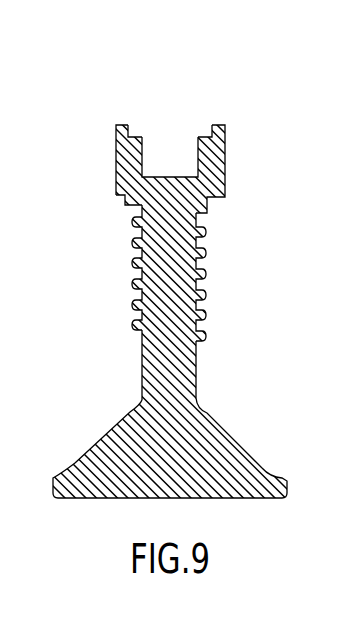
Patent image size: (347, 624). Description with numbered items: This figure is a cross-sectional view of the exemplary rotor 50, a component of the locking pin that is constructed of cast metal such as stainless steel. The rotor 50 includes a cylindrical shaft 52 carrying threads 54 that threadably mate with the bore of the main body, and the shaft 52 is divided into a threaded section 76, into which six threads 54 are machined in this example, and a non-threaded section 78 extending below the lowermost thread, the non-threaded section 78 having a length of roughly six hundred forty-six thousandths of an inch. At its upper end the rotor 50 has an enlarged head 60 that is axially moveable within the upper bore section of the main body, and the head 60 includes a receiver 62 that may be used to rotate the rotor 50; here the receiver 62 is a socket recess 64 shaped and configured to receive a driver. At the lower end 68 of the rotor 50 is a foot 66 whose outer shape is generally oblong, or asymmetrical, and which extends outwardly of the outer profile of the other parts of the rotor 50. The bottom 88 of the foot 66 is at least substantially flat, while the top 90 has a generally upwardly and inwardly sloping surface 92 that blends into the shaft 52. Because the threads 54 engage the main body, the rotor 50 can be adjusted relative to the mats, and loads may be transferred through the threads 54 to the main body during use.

The rotor 50 is at (252, 158).
The head 60 is at (116, 160).
The receiver 62 is at (185, 148).
The socket recess 64 is at (142, 148).
The threads 54 is at (206, 272).
The threaded section 76 is at (120, 269).
The shaft 52 is at (200, 371).
The non-threaded section 78 is at (142, 368).
The top 90 is at (229, 422).
The foot 66 is at (262, 467).
The bottom 88 is at (255, 499).
The lower end 68 is at (54, 456).
The sloping surface 92 is at (121, 427).